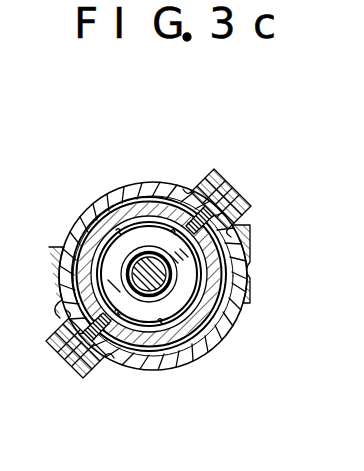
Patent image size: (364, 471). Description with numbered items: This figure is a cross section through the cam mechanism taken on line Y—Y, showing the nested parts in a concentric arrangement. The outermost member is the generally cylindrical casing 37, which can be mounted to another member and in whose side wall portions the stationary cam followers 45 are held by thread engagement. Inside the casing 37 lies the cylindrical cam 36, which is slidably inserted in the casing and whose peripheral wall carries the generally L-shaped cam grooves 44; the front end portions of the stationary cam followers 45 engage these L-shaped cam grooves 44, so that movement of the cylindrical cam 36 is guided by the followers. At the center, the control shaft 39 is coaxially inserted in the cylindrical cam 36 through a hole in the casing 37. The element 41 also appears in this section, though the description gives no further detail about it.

The casing 37 is at (103, 193).
The cylindrical cam 36 is at (157, 197).
The stationary cam followers 45 is at (210, 184).
The L-shaped cam grooves 44 is at (240, 227).
The control shaft 39 is at (148, 286).
The bearing ring 41 is at (170, 302).